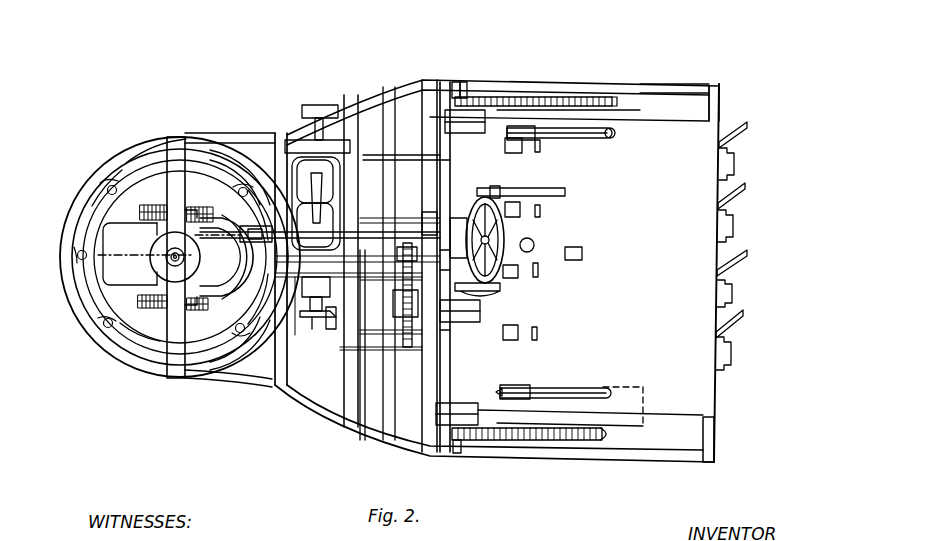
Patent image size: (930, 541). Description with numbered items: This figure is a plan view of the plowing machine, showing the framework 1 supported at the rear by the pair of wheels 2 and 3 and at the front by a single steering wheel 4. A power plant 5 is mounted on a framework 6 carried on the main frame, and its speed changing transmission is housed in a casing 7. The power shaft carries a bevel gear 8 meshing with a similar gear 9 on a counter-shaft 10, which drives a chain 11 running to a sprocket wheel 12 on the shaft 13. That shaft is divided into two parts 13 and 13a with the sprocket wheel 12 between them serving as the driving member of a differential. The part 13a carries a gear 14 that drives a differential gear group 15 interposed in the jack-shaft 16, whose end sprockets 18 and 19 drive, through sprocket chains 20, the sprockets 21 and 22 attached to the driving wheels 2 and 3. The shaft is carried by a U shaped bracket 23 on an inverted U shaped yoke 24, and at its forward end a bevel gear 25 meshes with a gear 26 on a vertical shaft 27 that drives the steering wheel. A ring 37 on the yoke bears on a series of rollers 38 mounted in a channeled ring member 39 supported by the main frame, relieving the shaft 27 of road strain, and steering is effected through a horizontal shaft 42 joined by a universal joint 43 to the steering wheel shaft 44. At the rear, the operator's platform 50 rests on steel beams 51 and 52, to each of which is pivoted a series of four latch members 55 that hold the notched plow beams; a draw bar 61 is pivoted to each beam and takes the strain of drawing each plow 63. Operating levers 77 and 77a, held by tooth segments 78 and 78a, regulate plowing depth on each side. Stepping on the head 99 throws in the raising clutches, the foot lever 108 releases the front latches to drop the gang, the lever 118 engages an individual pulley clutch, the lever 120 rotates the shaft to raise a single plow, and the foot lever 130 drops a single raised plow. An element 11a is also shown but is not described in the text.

The framework 1 is at (112, 167).
The wheel 2 is at (513, 88).
The wheel 3 is at (640, 116).
The steering wheel 4 is at (145, 254).
The power plant 5 is at (328, 180).
The framework 6 is at (295, 280).
The casing 7 is at (320, 208).
The bevel gear 8 is at (314, 318).
The bevel gear 9 is at (329, 325).
The counter-shaft 10 is at (373, 338).
The chain 11 is at (405, 303).
The column 11a is at (427, 368).
The sprocket wheel 12 is at (408, 250).
The shaft 13 is at (372, 250).
The shaft part 13a is at (441, 253).
The gear 14 is at (542, 212).
The differential gear group 15 is at (480, 297).
The jack-shaft 16 is at (478, 362).
The sprocket 18 is at (447, 440).
The sprocket 19 is at (455, 88).
The sprocket chain 20 is at (548, 97).
The sprocket 21 is at (604, 444).
The sprocket 22 is at (606, 98).
The U shaped bracket 23 is at (221, 292).
The inverted U shaped yoke 24 is at (175, 370).
The bevel gear 25 is at (212, 212).
The bevel gear 26 is at (175, 256).
The vertical shaft 27 is at (173, 259).
The ring 37 is at (138, 337).
The rollers 38 is at (131, 162).
The channeled ring member 39 is at (90, 203).
The horizontal shaft 42 is at (242, 225).
The universal joint 43 is at (264, 228).
The steering wheel shaft 44 is at (268, 262).
The operator's platform 50 is at (663, 315).
The steel beam 51 is at (716, 108).
The steel beam 52 is at (468, 88).
The latch member 55 is at (734, 166).
The draw bar 61 is at (408, 163).
The plow 63 is at (748, 128).
The operating lever 77 is at (530, 390).
The operating lever 77a is at (530, 141).
The tooth segment 78 is at (600, 390).
The tooth segment 78a is at (597, 138).
The head 99 is at (534, 244).
The foot lever 108 is at (583, 256).
The operating lever 118 is at (541, 146).
The operating lever 120 is at (503, 193).
The foot lever 130 is at (537, 334).